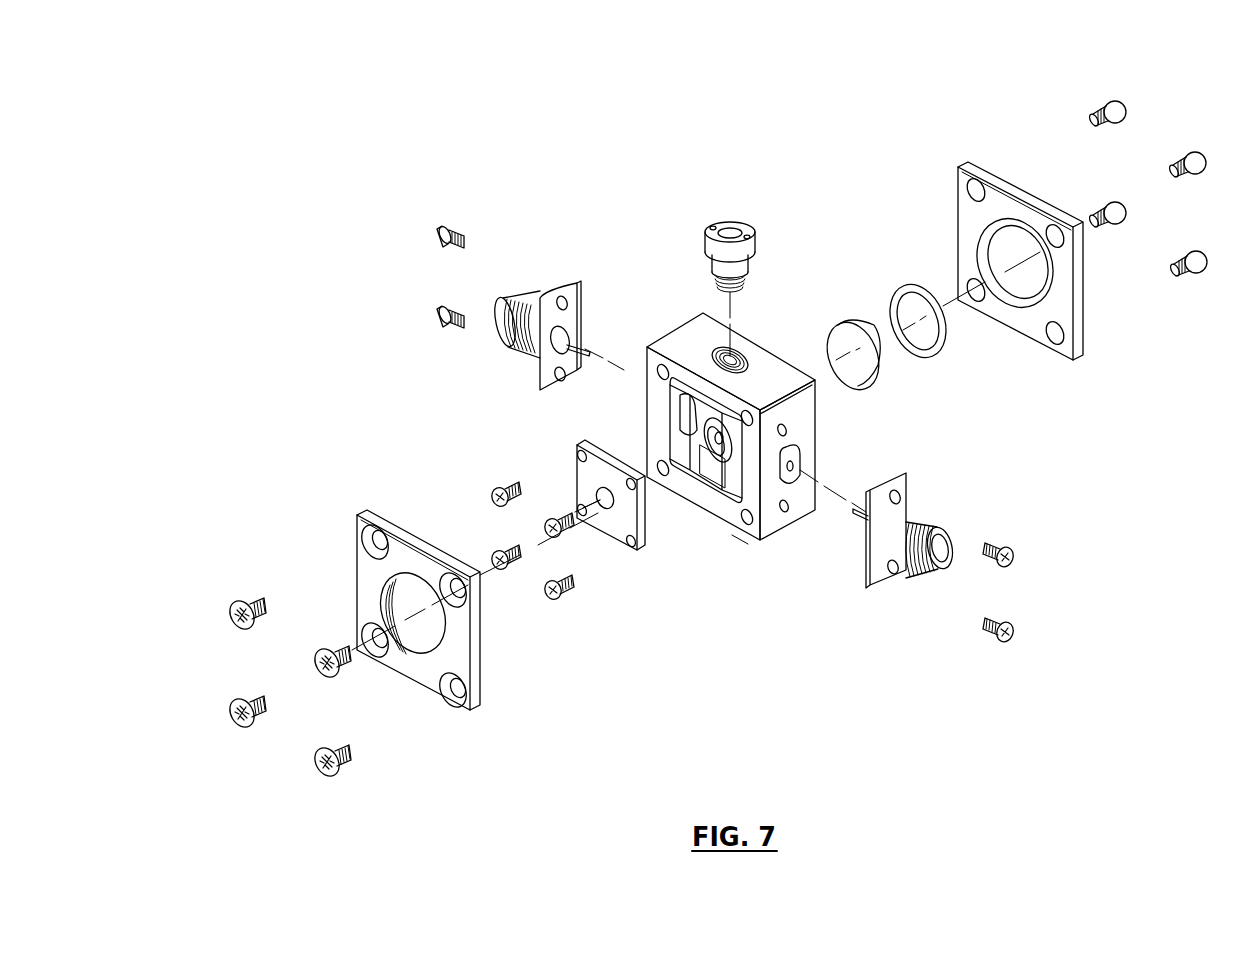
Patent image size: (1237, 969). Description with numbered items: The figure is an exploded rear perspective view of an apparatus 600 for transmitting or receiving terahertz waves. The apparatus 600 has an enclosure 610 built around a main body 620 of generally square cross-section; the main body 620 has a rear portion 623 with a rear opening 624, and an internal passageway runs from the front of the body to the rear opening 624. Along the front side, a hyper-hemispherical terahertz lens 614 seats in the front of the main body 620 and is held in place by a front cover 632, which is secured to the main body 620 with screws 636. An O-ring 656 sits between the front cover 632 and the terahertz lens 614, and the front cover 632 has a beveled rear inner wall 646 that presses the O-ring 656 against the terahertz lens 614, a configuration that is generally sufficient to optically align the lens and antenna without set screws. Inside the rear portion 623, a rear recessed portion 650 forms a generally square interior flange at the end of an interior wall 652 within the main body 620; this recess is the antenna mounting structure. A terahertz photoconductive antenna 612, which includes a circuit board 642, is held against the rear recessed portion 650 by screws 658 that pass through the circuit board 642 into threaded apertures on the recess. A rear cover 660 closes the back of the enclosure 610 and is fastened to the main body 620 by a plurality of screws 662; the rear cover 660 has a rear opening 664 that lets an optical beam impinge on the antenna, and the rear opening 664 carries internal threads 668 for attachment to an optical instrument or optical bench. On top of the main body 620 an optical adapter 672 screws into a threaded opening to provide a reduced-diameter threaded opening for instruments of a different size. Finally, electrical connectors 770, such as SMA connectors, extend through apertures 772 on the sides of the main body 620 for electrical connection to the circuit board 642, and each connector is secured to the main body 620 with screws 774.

The apparatus 600 is at (362, 105).
The enclosure 610 is at (680, 272).
The terahertz photoconductive antenna 612 is at (563, 430).
The terahertz lens 614 is at (853, 322).
The main body 620 is at (672, 345).
The rear portion 623 is at (736, 547).
The rear opening 624 is at (714, 470).
The front cover 632 is at (1030, 335).
The screws 636 is at (1112, 100).
The circuit board 642 is at (613, 545).
The beveled rear inner wall 646 is at (975, 262).
The rear recessed portion 650 is at (716, 412).
The interior wall 652 is at (672, 437).
The O-ring 656 is at (946, 352).
The screws 658 is at (548, 522).
The rear cover 660 is at (430, 680).
The screws 662 is at (242, 598).
The rear opening 664 is at (410, 630).
The internal threads 668 is at (405, 540).
The optical adapter 672 is at (745, 218).
The electrical connectors 770 is at (521, 285).
The apertures 772 is at (795, 462).
The screws 774 is at (440, 228).